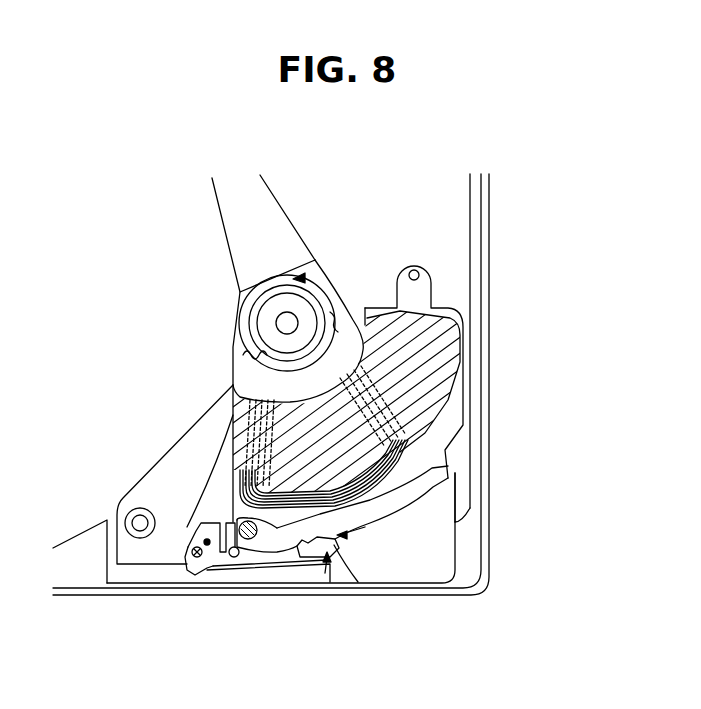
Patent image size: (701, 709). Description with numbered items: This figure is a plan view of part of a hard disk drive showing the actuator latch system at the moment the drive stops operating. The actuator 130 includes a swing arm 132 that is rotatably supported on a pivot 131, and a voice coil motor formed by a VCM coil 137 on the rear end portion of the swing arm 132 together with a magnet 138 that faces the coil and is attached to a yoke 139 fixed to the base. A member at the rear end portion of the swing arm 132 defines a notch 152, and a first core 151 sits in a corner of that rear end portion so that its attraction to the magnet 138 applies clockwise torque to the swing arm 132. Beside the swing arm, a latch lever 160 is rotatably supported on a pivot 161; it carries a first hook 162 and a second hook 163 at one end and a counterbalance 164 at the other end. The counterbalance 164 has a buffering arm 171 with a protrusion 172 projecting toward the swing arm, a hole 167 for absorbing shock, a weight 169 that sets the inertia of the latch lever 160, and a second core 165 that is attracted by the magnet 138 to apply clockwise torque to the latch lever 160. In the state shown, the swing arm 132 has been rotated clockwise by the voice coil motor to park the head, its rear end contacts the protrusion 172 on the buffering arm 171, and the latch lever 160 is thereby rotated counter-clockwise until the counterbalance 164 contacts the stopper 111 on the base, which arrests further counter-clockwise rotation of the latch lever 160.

The stopper 111 is at (207, 578).
The actuator 130 is at (311, 243).
The pivot 131 is at (289, 321).
The swing arm 132 is at (313, 280).
The VCM coil 137 is at (407, 467).
The magnet 138 is at (450, 342).
The yoke 139 is at (452, 308).
The first core 151 is at (225, 500).
The notch 152 is at (280, 555).
The latch lever 160 is at (260, 570).
The pivot 161 is at (233, 558).
The first hook 162 is at (302, 560).
The second hook 163 is at (332, 543).
The counterbalance 164 is at (193, 551).
The second core 165 is at (193, 533).
The hole 167 is at (180, 567).
The weight 169 is at (125, 520).
The buffering arm 171 is at (233, 522).
The protrusion 172 is at (207, 539).